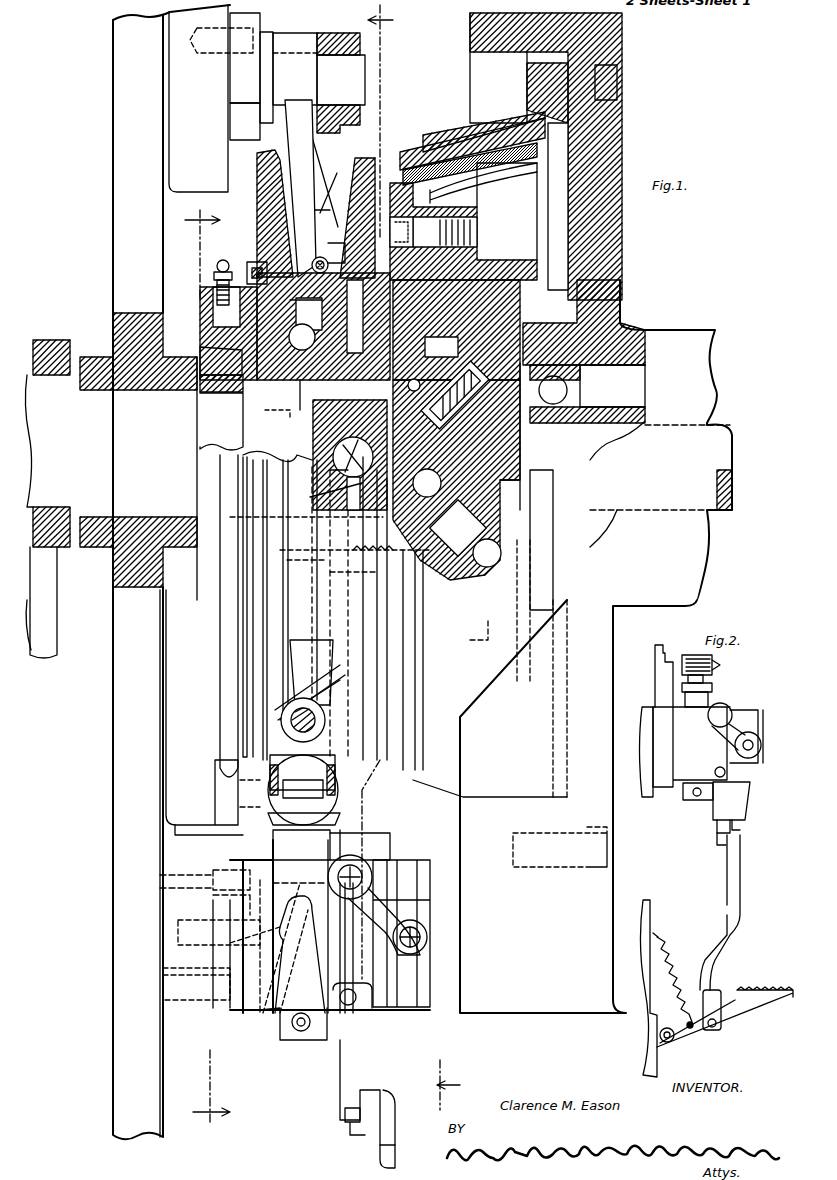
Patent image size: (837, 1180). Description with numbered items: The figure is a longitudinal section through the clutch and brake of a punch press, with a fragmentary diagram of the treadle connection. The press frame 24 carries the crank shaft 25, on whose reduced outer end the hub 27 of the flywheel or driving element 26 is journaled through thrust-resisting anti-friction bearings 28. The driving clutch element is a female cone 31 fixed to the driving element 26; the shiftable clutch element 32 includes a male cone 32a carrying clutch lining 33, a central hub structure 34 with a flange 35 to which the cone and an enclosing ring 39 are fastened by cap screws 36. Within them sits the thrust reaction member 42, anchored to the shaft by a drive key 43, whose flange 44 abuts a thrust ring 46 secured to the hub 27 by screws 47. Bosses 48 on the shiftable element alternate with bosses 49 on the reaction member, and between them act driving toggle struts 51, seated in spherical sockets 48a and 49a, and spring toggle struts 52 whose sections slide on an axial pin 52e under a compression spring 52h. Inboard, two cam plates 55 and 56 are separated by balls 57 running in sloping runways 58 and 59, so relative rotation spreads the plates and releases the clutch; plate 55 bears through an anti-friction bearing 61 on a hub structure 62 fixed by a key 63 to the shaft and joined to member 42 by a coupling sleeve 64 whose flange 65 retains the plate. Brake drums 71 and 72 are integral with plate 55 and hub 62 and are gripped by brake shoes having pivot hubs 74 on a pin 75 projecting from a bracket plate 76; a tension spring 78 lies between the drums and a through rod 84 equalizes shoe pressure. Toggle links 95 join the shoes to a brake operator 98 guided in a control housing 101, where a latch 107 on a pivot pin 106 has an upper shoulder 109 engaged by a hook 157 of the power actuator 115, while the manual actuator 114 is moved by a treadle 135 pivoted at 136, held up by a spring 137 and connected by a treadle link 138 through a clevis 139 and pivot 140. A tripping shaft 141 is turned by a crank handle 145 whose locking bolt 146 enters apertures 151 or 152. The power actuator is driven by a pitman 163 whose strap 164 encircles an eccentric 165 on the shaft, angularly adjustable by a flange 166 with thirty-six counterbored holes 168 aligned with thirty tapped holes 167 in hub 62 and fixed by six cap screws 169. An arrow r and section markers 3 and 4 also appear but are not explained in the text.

In FIG. 1, the press frame 24 is at (113, 207).
In FIG. 2, the press frame 24 is at (660, 905).
In FIG. 1, the crank shaft 25 is at (112, 388).
In FIG. 1, the rotation direction r is at (175, 442).
In FIG. 1, the driving element 26 is at (618, 36).
In FIG. 1, the hub portion 27 is at (665, 342).
In FIG. 1, the thrust resisting anti-friction bearings 28 is at (567, 390).
In FIG. 1, the female cone member 31 is at (460, 128).
In FIG. 1, the shiftable clutch element 32 is at (393, 168).
In FIG. 1, the male cone 32a is at (468, 176).
In FIG. 1, the clutch lining material 33 is at (430, 148).
In FIG. 1, the central hub structure 34 is at (468, 270).
In FIG. 1, the radially extending flange 35 is at (470, 202).
In FIG. 1, the cap screws 36 is at (478, 233).
In FIG. 1, the enclosing ring 39 is at (600, 252).
In FIG. 1, the thrust reaction member 42 is at (505, 270).
In FIG. 1, the drive key 43 is at (520, 447).
In FIG. 1, the radially extending flange 44 is at (480, 645).
In FIG. 1, the thrust ring 46 is at (500, 262).
In FIG. 1, the screws 47 is at (545, 300).
In FIG. 1, the lugs or bosses 48 is at (525, 472).
In FIG. 1, the spherical sockets 48a is at (440, 568).
In FIG. 1, the lugs or bosses 49 is at (458, 528).
In FIG. 1, the spherical sockets 49a is at (470, 578).
In FIG. 1, the driving toggle struts 51 is at (481, 527).
In FIG. 1, the spring toggle struts 52 is at (456, 430).
In FIG. 1, the axial pin 52e is at (440, 348).
In FIG. 1, the compression spring 52h is at (512, 428).
In FIG. 1, the cam plate 55 is at (312, 452).
In FIG. 1, the cam plate 56 is at (327, 494).
In FIG. 1, the balls 57 is at (350, 455).
In FIG. 1, the runway 58 is at (276, 427).
In FIG. 1, the runway 59 is at (330, 544).
In FIG. 1, the anti-friction bearing 61 is at (323, 326).
In FIG. 1, the hub structure 62 is at (272, 395).
In FIG. 1, the key 63 is at (267, 422).
In FIG. 1, the coupling sleeve 64 is at (300, 412).
In FIG. 1, the outwardly extending flange 65 is at (391, 325).
In FIG. 1, the brake drum 71 is at (345, 172).
In FIG. 1, the brake drum 72 is at (260, 178).
In FIG. 1, the pivot hub 74 is at (340, 33).
In FIG. 1, the supporting pin 75 is at (360, 64).
In FIG. 1, the bracket plate 76 is at (233, 88).
In FIG. 1, the coiled tension spring 78 is at (322, 256).
In FIG. 1, the through rod 84 is at (293, 724).
In FIG. 1, the toggle links 95 is at (338, 773).
In FIG. 1, the brake operator 98 is at (306, 845).
In FIG. 2, the brake operator 98 is at (705, 693).
In FIG. 1, the control housing 101 is at (223, 855).
In FIG. 1, the pivot pin 106 is at (299, 1032).
In FIG. 1, the latch or dog 107 is at (270, 1030).
In FIG. 1, the nose or shoulder 109 is at (330, 926).
In FIG. 1, the manual actuator 114 is at (370, 815).
In FIG. 2, the manual actuator 114 is at (740, 800).
In FIG. 1, the power actuator 115 is at (232, 840).
In FIG. 2, the power actuator 115 is at (648, 694).
In FIG. 2, the treadle 135 is at (750, 992).
In FIG. 2, the pivot 136 is at (675, 1040).
In FIG. 2, the spring 137 is at (672, 970).
In FIG. 1, the treadle link 138 is at (400, 1155).
In FIG. 2, the treadle link 138 is at (742, 908).
In FIG. 2, the adjustable clevis 139 is at (722, 1010).
In FIG. 1, the pivotal connection 140 is at (346, 1127).
In FIG. 2, the pivotal connection 140 is at (712, 836).
In FIG. 1, the tripping shaft 141 is at (434, 930).
In FIG. 2, the tripping shaft 141 is at (755, 755).
In FIG. 1, the crank handle 145 is at (430, 890).
In FIG. 2, the crank handle 145 is at (752, 708).
In FIG. 1, the locking bolt 146 is at (395, 860).
In FIG. 1, the locking aperture 151 is at (372, 830).
In FIG. 1, the locking aperture 152 is at (350, 1007).
In FIG. 1, the hook 157 is at (280, 927).
In FIG. 1, the pitman 163 is at (228, 662).
In FIG. 2, the pitman 163 is at (657, 650).
In FIG. 1, the eccentric strap 164 is at (214, 305).
In FIG. 1, the eccentric 165 is at (207, 328).
In FIG. 1, the adjusting flange 166 is at (212, 295).
In FIG. 1, the tapped holes 167 is at (257, 262).
In FIG. 1, the counterbored holes 168 is at (252, 262).
In FIG. 1, the socket head cap screws 169 is at (247, 266).
In FIG. 1, the section line 3 is at (421, 557).
In FIG. 1, the section line 4 is at (207, 667).